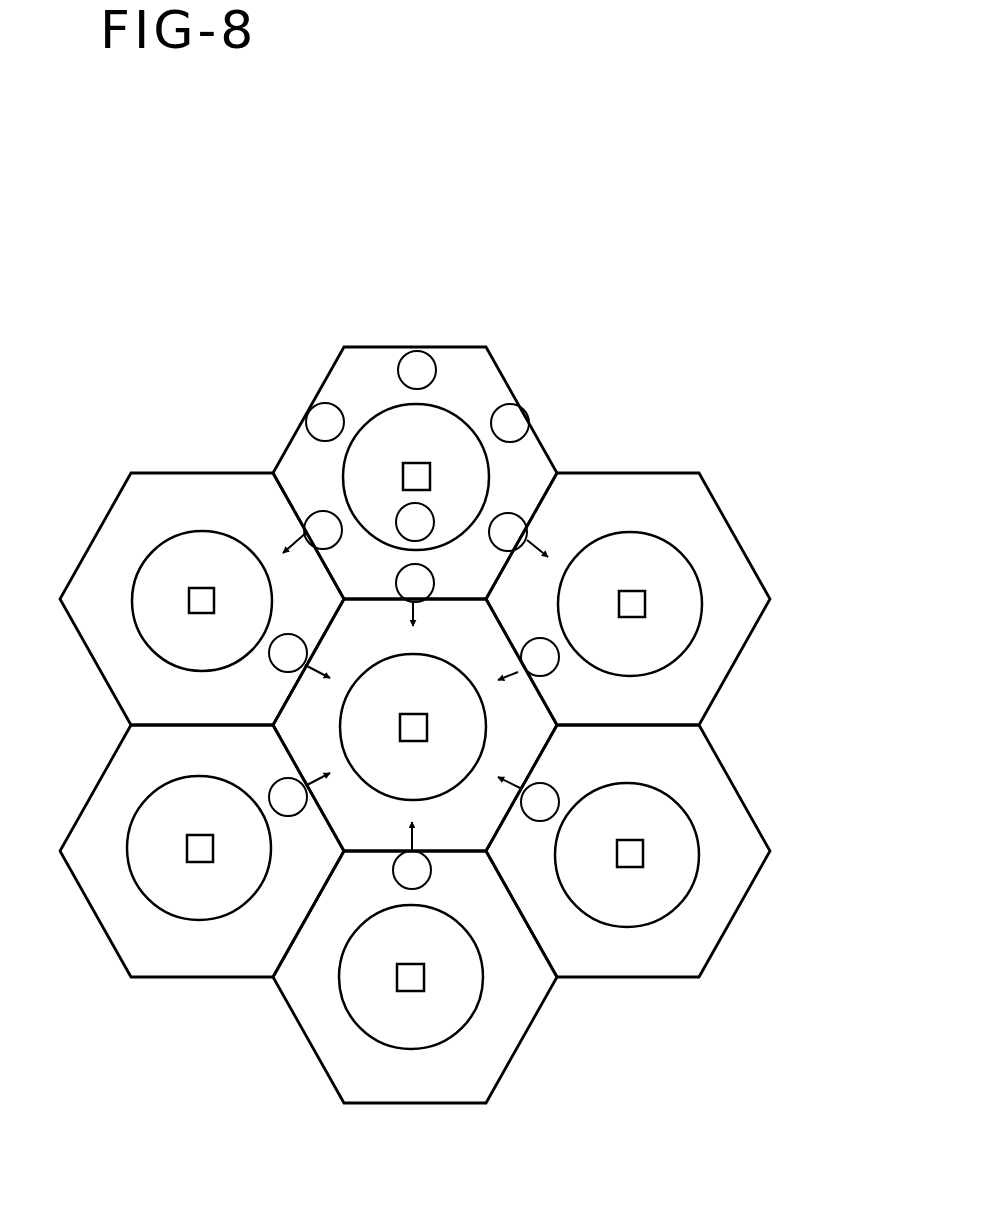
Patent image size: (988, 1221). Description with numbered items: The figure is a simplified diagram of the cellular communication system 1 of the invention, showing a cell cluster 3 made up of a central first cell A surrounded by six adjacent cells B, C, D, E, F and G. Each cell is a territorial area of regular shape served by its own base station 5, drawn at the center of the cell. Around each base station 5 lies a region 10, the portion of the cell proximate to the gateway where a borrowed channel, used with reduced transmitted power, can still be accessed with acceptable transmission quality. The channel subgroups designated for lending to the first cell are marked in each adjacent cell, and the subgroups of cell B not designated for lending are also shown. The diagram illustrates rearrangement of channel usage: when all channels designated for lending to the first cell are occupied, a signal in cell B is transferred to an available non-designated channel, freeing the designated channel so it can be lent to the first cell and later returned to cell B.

The cellular communication system 1 is at (617, 188).
The cell cluster 3 is at (357, 320).
The base station 5 is at (430, 479).
The region 10 is at (344, 474).